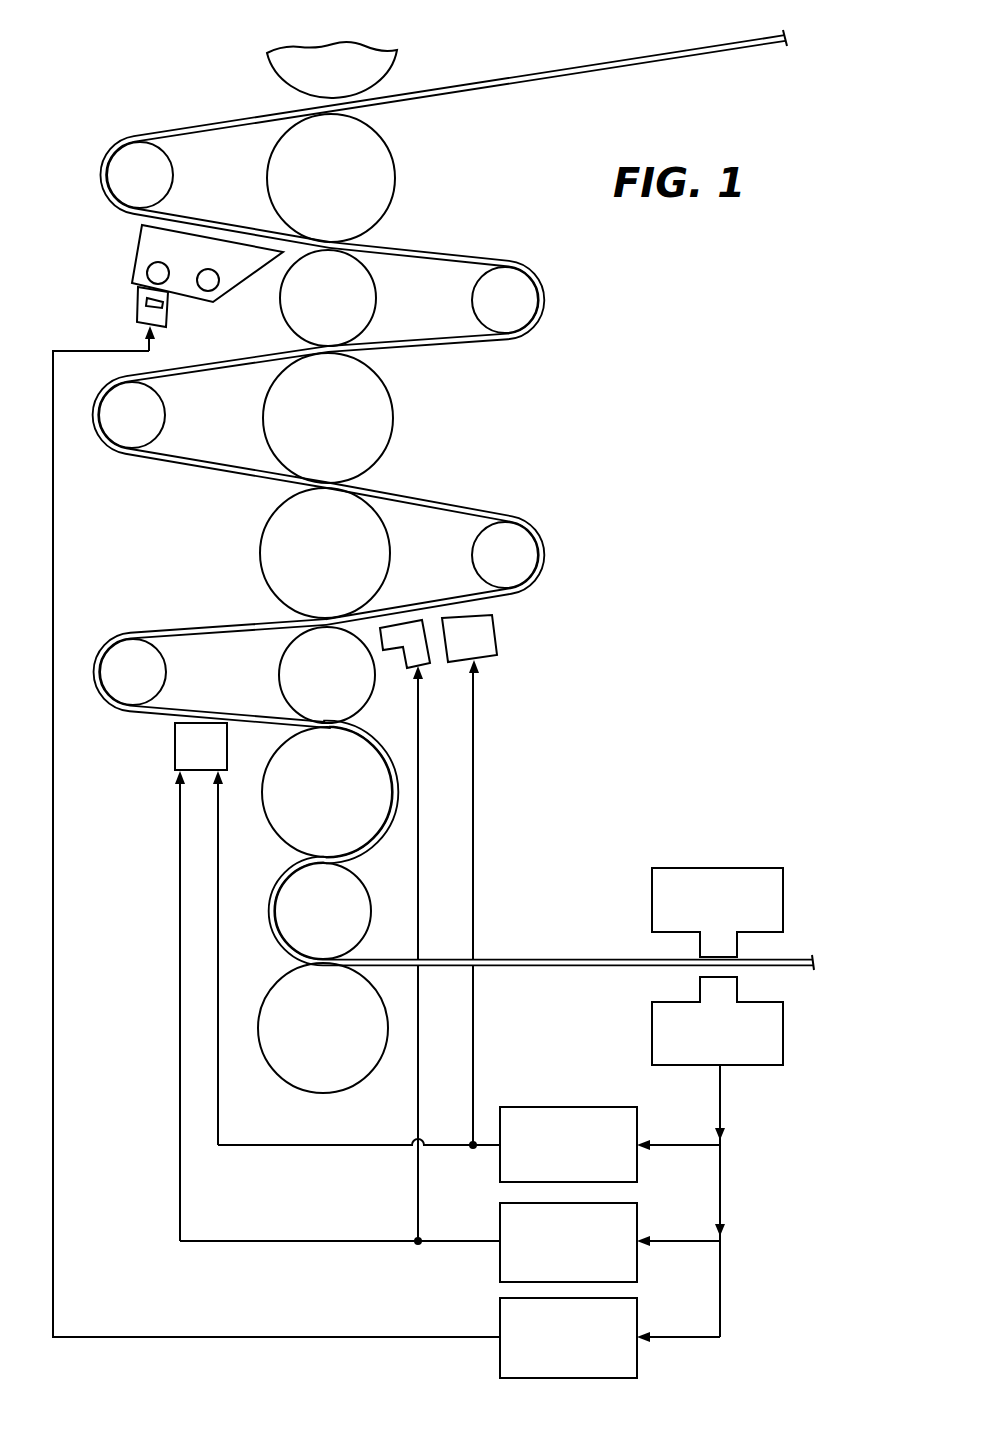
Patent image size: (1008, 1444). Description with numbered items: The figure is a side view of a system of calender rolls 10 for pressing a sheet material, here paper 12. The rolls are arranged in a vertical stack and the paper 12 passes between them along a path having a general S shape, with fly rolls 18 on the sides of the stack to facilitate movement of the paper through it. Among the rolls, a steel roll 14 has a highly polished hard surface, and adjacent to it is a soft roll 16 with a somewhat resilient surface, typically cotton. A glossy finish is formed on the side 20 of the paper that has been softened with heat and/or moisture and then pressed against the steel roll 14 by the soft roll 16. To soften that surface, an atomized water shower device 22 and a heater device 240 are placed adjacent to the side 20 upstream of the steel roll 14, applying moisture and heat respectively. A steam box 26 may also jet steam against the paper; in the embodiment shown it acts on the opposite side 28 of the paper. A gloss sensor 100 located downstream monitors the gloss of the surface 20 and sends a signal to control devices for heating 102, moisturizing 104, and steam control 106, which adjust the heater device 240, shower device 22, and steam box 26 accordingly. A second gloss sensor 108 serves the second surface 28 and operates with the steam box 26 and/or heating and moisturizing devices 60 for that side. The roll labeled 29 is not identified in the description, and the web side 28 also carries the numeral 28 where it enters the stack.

The system of calender rolls 10 is at (404, 43).
The paper 12 is at (648, 53).
The steel roll 14 is at (281, 677).
The soft roll 16 is at (261, 574).
The fly rolls 18 is at (118, 157).
The side of the paper 20 is at (593, 73).
The atomized water shower device 22 is at (393, 652).
The steam box 26 is at (132, 240).
The opposite side of the paper 28 is at (497, 80).
The top roll 29 is at (390, 214).
The heating and moisturizing devices 60 is at (175, 750).
The gloss sensor 100 is at (700, 868).
The heating control device 102 is at (540, 1107).
The moisturizing control device 104 is at (637, 1222).
The steam control device 106 is at (637, 1320).
The second gloss sensor 108 is at (652, 1018).
The heater device 240 is at (497, 641).